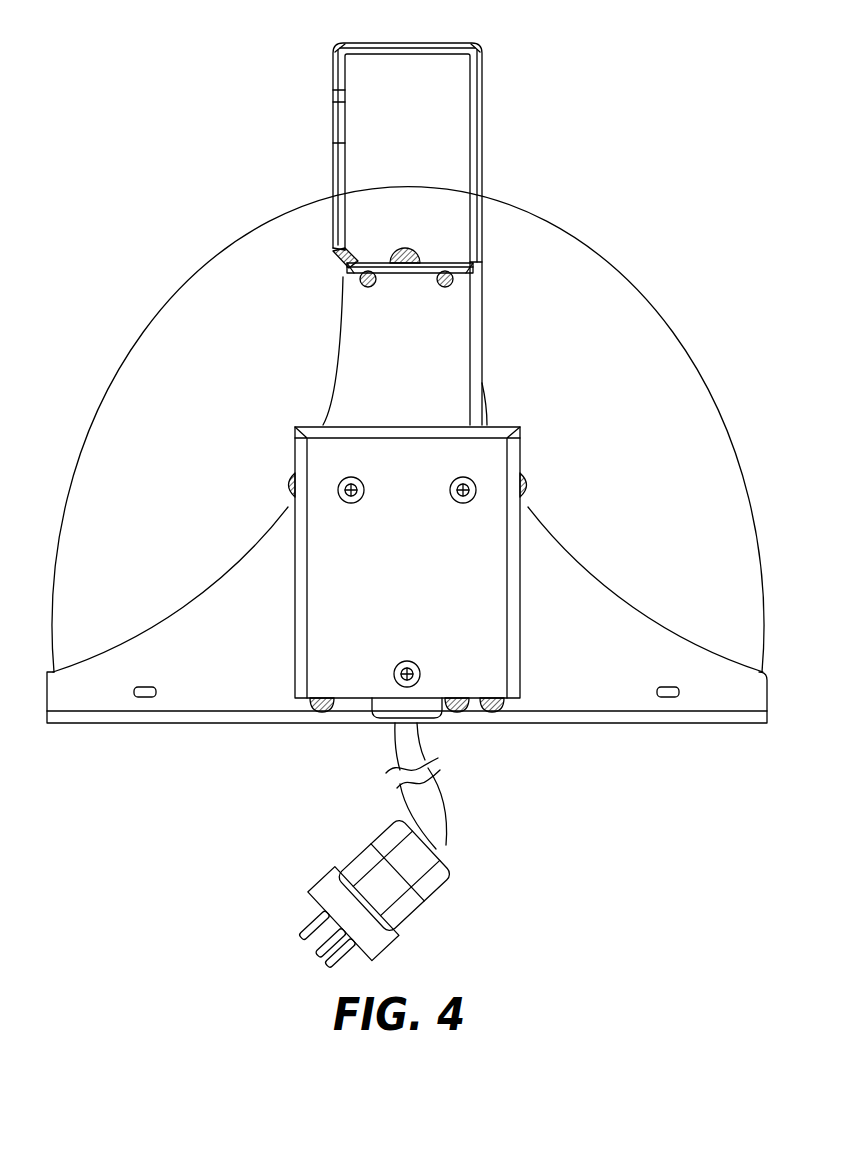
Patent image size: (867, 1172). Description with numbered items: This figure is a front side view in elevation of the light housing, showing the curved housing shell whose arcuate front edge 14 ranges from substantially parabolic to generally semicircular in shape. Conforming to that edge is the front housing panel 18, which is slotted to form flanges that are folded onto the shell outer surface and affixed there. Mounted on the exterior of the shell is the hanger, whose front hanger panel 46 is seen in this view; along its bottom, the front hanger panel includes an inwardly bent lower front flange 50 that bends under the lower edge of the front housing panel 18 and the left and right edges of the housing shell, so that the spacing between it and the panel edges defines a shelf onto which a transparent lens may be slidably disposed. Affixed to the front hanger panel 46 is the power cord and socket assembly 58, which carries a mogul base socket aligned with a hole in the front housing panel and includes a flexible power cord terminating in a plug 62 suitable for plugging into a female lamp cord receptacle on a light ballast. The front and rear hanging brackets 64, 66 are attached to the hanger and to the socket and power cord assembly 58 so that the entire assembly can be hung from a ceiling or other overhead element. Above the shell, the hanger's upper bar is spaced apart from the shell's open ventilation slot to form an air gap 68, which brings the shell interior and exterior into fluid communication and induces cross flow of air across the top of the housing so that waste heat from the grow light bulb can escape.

The arcuate front edge 14 is at (588, 343).
The front housing panel 18 is at (663, 470).
The front hanger panel 46 is at (358, 367).
The lower front flange 50 is at (140, 725).
The power cord and socket assembly 58 is at (378, 632).
The plug 62 is at (362, 845).
The front hanging bracket 64 is at (483, 137).
The rear hanging bracket 66 is at (332, 133).
The air gap 68 is at (331, 281).